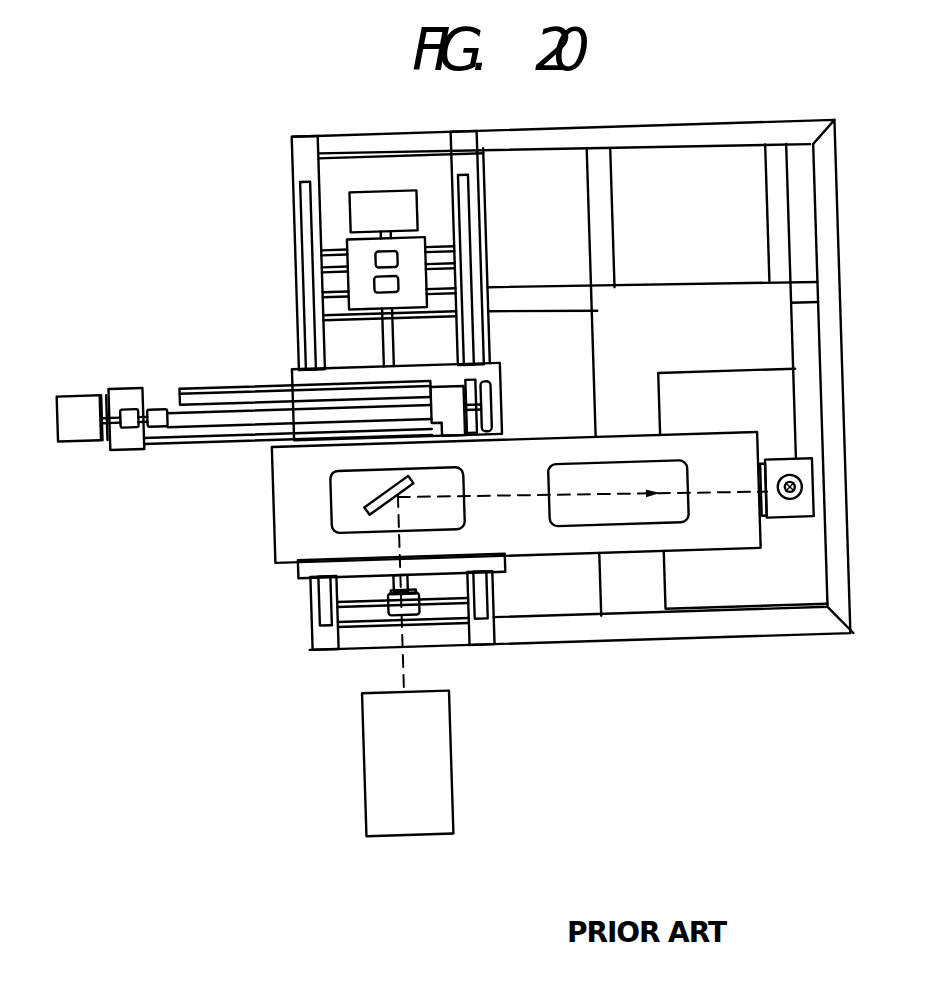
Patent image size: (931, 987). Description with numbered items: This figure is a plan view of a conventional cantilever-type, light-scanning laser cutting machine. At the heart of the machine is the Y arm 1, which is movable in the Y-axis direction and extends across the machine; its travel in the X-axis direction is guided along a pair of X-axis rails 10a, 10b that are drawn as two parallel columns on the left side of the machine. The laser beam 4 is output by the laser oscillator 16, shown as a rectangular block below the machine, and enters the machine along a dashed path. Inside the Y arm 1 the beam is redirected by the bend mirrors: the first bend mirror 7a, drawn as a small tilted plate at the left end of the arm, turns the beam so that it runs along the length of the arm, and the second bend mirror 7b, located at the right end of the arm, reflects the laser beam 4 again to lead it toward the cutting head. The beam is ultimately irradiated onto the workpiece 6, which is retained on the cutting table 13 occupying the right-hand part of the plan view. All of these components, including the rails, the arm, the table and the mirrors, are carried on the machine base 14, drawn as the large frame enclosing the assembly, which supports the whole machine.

The Y arm 1 is at (546, 442).
The laser beam 4 is at (715, 495).
The workpiece 6 is at (706, 390).
The first bend mirror 7a is at (442, 487).
The second bend mirror 7b is at (787, 512).
The X-axis rail 10a is at (312, 217).
The X-axis rail 10b is at (470, 219).
The cutting table 13 is at (609, 331).
The machine base 14 is at (580, 633).
The laser oscillator 16 is at (422, 751).